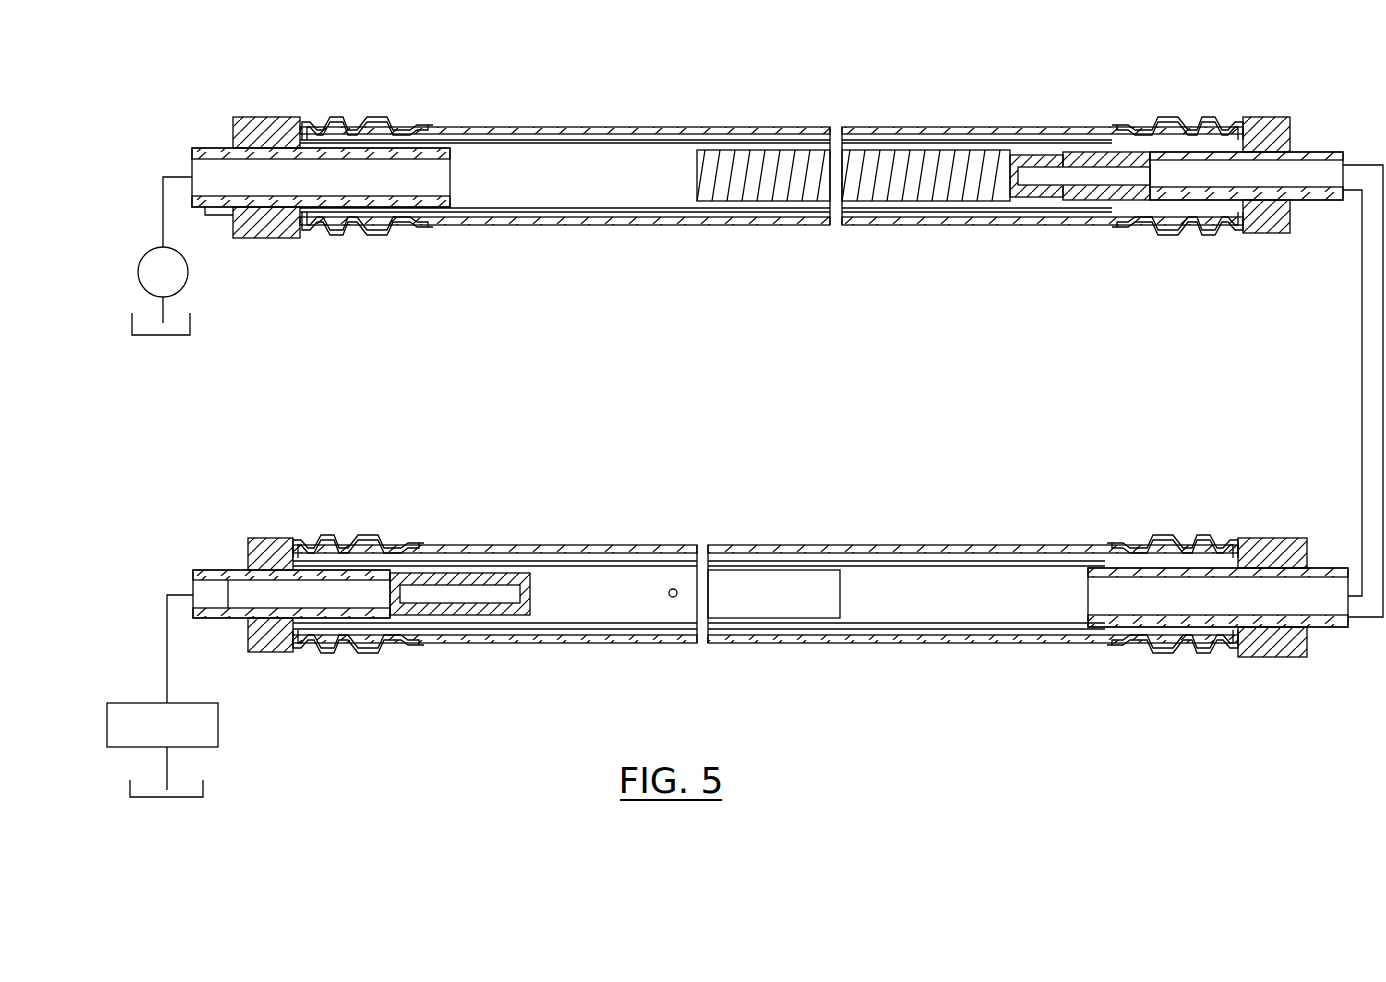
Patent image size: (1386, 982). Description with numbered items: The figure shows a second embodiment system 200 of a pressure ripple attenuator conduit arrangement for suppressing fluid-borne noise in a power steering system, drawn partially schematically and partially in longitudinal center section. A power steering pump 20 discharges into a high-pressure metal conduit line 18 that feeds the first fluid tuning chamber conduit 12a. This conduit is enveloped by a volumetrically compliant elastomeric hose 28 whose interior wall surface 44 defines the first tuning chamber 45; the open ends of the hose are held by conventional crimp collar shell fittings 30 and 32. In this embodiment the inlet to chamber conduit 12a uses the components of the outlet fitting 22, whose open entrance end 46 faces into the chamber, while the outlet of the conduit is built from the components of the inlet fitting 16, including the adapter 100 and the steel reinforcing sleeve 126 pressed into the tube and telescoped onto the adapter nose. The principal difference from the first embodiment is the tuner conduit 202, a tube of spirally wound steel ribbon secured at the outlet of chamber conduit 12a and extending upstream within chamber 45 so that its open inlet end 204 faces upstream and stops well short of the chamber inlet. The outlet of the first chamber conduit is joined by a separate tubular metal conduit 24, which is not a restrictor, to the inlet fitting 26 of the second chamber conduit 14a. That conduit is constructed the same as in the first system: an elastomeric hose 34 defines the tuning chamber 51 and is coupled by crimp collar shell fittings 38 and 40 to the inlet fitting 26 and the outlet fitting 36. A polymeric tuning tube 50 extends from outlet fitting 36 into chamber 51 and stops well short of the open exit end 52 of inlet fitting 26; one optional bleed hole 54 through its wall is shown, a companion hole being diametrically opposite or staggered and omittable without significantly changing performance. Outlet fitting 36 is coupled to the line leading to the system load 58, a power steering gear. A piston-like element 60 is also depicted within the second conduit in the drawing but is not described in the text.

The second embodiment system 200 is at (213, 94).
The fluid tuning chamber conduit 12a is at (210, 126).
The high-pressure metal conduit line 18 is at (165, 214).
The power steering pump 20 is at (188, 278).
The outlet fitting 22 is at (209, 211).
The crimp collar shell fitting 32 is at (365, 243).
The open entrance end 46 is at (452, 176).
The first tuning chamber 45 is at (588, 189).
The interior wall surface 44 is at (598, 207).
The elastomeric hose 28 is at (620, 228).
The open inlet end 204 is at (694, 168).
The tuner conduit 202 is at (862, 207).
The adapter 100 is at (1071, 147).
The crimp collar shell fitting 30 is at (1182, 238).
The steel reinforcing sleeve 126 is at (1220, 185).
The inlet fitting 16 is at (1299, 219).
The tubular metal conduit 24 is at (1362, 350).
The second chamber conduit 14a is at (238, 554).
The crimp collar shell fitting 40 is at (353, 536).
The polymeric tuning tube 50 is at (666, 564).
The elastomeric hose 34 is at (804, 544).
The tuning chamber 51 is at (936, 584).
The crimp collar shell fitting 38 is at (1173, 537).
The bleed hole 54 is at (668, 594).
The piston 60 is at (842, 595).
The open exit end 52 is at (1088, 592).
The outlet fitting 36 is at (224, 621).
The system load 58 is at (218, 722).
The inlet fitting 26 is at (1313, 637).